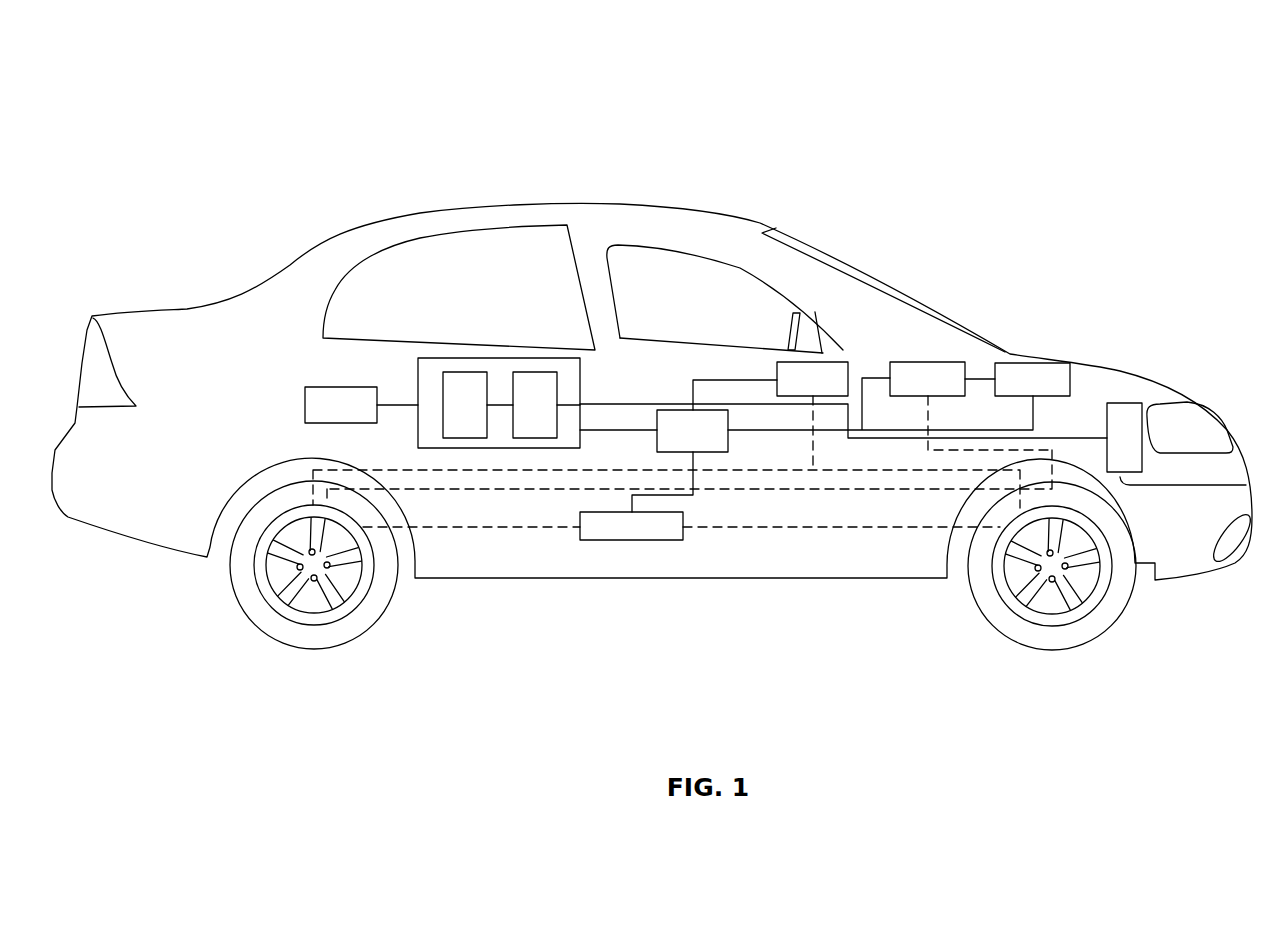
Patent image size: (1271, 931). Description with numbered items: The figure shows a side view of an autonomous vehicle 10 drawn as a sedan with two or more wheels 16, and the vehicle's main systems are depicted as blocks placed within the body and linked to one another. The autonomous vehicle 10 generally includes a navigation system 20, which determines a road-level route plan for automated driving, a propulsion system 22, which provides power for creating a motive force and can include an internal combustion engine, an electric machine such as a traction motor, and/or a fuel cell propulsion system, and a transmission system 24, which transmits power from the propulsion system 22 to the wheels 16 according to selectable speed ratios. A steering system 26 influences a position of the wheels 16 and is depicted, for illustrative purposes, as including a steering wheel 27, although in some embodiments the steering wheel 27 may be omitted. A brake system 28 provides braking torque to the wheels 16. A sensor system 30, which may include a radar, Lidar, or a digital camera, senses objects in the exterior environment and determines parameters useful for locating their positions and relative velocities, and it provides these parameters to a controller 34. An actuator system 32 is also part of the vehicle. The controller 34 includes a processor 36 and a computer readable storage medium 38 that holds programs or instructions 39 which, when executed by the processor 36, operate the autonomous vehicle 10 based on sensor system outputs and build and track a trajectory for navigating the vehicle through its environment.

The autonomous vehicle 10 is at (187, 107).
The wheels 16 is at (315, 649).
The navigation system 20 is at (318, 387).
The propulsion system 22 is at (1032, 362).
The transmission system 24 is at (913, 362).
The steering system 26 is at (832, 362).
The steering wheel 27 is at (790, 320).
The brake system 28 is at (632, 541).
The sensor system 30 is at (1120, 403).
The actuator system 32 is at (677, 444).
The controller 34 is at (505, 357).
The processor 36 is at (452, 371).
The computer readable storage medium 38 is at (535, 371).
The instructions 39 is at (528, 440).